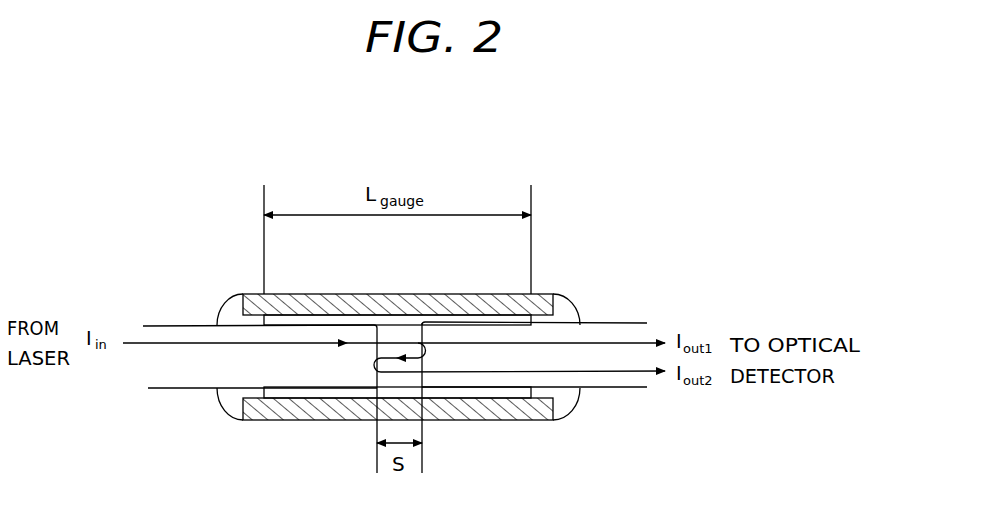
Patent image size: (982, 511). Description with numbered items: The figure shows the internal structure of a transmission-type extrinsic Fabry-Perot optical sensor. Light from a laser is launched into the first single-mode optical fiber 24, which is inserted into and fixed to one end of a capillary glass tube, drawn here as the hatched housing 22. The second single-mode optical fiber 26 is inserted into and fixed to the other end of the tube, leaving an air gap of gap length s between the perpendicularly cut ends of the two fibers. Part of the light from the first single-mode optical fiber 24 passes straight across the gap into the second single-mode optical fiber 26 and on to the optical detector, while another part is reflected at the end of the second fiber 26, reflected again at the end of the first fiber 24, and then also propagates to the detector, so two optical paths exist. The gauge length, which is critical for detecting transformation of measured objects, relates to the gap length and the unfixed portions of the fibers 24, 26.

The capillary tube housing 22 is at (273, 424).
The first single-mode optical fiber 24 is at (165, 389).
The second single-mode optical fiber 26 is at (396, 293).